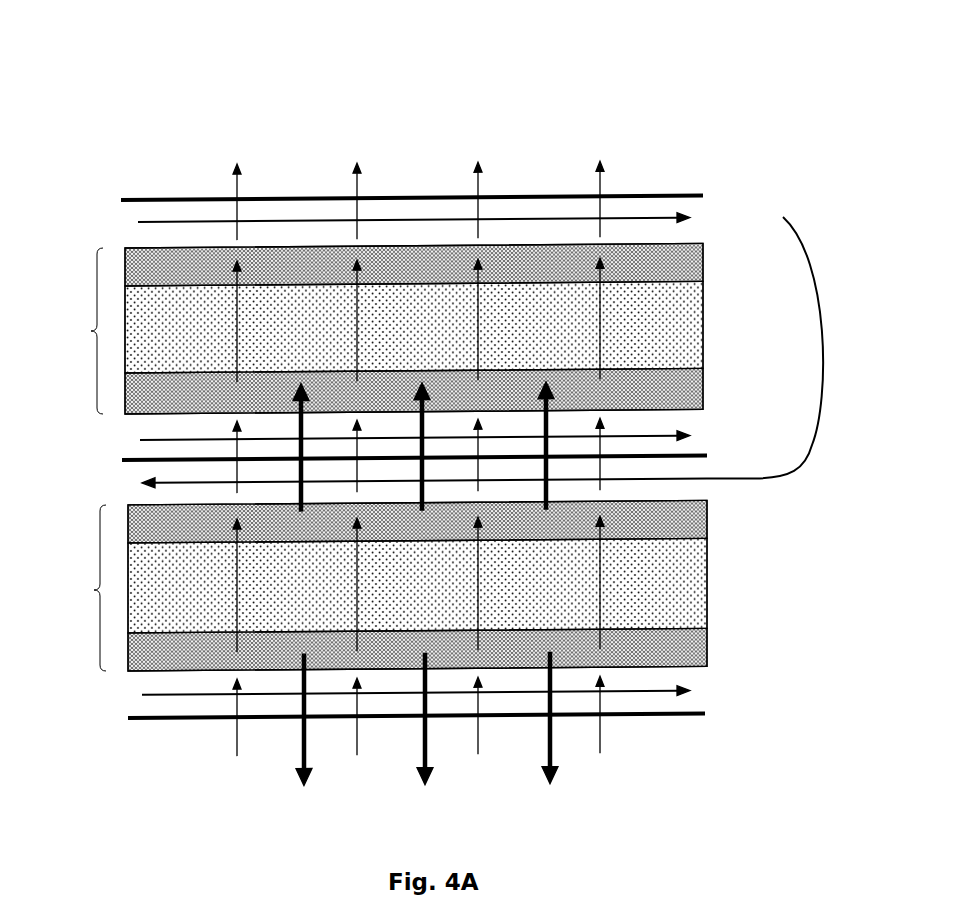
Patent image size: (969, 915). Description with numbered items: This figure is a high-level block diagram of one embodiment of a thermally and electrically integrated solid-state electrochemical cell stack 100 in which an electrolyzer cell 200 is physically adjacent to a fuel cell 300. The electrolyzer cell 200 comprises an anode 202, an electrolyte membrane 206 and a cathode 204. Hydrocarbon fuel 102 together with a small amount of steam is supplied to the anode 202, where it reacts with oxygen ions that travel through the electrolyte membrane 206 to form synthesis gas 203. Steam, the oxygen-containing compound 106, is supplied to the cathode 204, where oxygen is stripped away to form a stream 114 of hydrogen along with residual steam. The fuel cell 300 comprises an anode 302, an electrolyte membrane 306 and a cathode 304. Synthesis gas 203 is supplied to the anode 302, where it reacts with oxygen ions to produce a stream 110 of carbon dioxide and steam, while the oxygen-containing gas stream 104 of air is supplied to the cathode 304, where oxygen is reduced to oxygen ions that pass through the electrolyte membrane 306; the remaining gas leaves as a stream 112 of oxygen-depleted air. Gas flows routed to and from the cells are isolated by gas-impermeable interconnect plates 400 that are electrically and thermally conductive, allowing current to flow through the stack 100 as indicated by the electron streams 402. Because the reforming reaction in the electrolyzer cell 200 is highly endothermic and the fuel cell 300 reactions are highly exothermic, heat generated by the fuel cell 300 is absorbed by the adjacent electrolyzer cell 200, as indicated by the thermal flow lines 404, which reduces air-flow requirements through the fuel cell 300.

The integrated solid-state electrochemical cell stack 100 is at (237, 67).
The hydrocarbon fuel 102 is at (73, 210).
The oxygen-containing gas stream 104 is at (118, 707).
The oxygen-containing compound 106 is at (103, 420).
The stream of carbon dioxide and steam 110 is at (64, 476).
The stream of oxygen-depleted air 112 is at (770, 705).
The stream of hydrogen 114 is at (742, 428).
The electrolyzer cell 200 is at (377, 328).
The anode of the electrolyzer cell 202 is at (690, 259).
The synthesis gas 203 is at (732, 208).
The cathode of the electrolyzer cell 204 is at (697, 384).
The electrolyte membrane of the electrolyzer cell 206 is at (690, 323).
The fuel cell 300 is at (379, 585).
The anode of the fuel cell 302 is at (695, 519).
The cathode of the fuel cell 304 is at (700, 648).
The electrolyte membrane of the fuel cell 306 is at (698, 584).
The interconnect plates 400 is at (640, 196).
The electron streams 402 is at (355, 187).
The thermal flow lines 404 is at (426, 490).